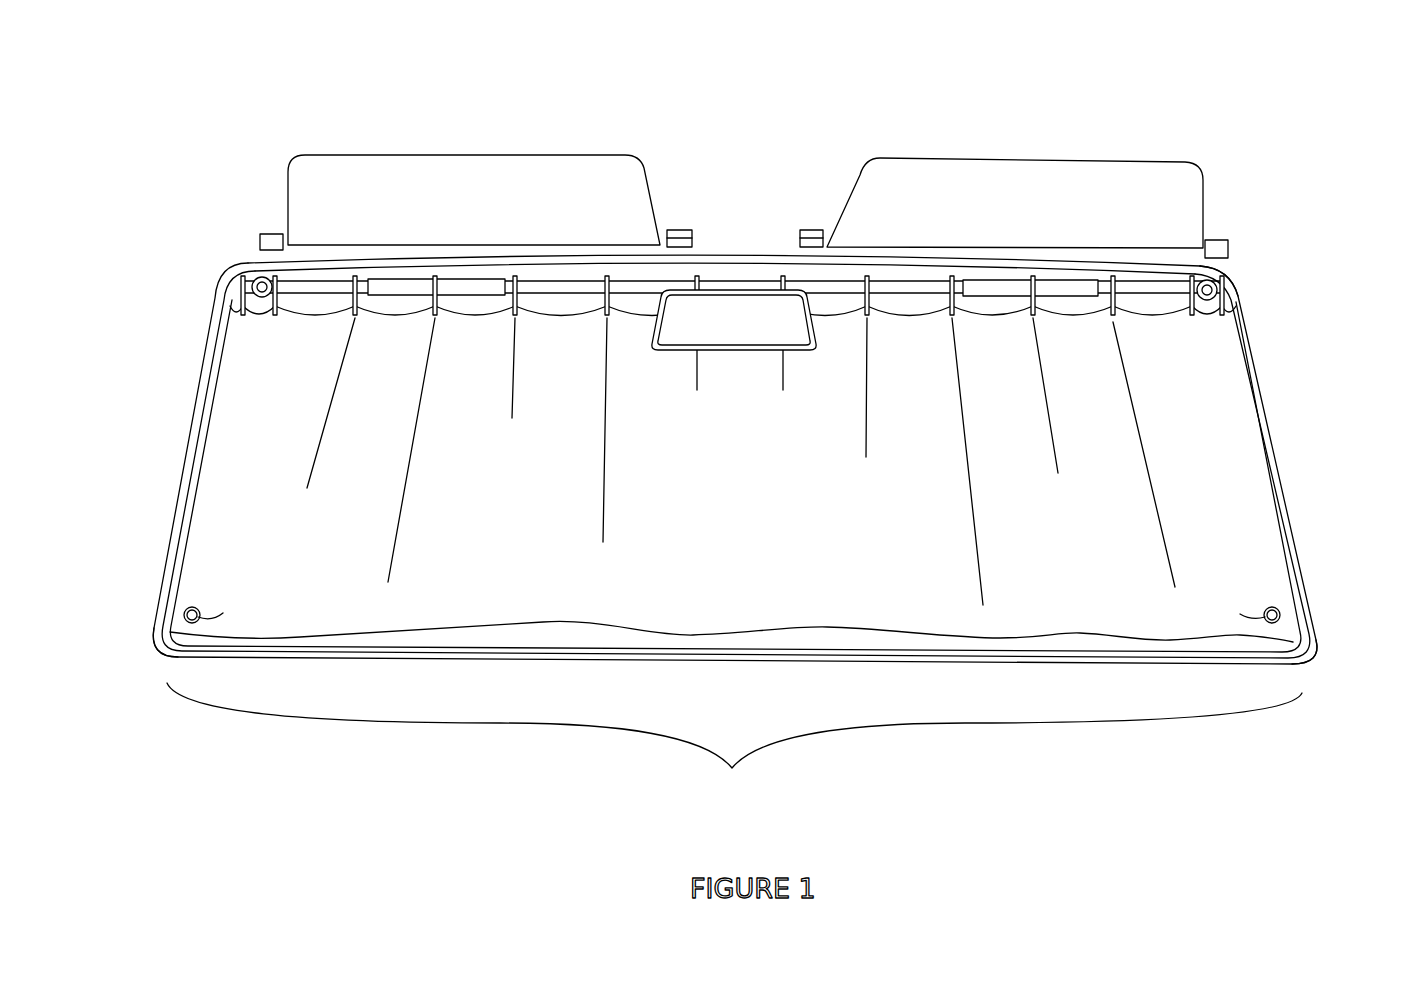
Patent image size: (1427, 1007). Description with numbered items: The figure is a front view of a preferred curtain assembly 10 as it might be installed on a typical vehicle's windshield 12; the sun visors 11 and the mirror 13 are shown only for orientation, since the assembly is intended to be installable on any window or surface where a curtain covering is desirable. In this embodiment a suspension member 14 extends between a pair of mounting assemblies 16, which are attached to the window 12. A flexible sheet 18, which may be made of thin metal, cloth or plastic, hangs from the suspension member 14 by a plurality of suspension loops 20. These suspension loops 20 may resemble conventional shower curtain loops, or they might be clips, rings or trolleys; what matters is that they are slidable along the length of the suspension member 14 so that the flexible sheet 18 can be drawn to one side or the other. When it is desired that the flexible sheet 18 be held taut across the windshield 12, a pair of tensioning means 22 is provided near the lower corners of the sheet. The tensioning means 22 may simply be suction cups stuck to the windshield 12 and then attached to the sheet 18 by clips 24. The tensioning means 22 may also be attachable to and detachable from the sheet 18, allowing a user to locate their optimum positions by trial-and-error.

The curtain assembly 10 is at (734, 748).
The sun visors 11 is at (863, 176).
The windshield 12 is at (231, 308).
The mirror 13 is at (785, 307).
The suspension member 14 is at (302, 287).
The mounting assemblies 16 is at (1228, 268).
The flexible sheet 18 is at (1202, 437).
The suspension loops 20 is at (950, 266).
The tensioning means 22 is at (167, 647).
The clips 24 is at (220, 597).